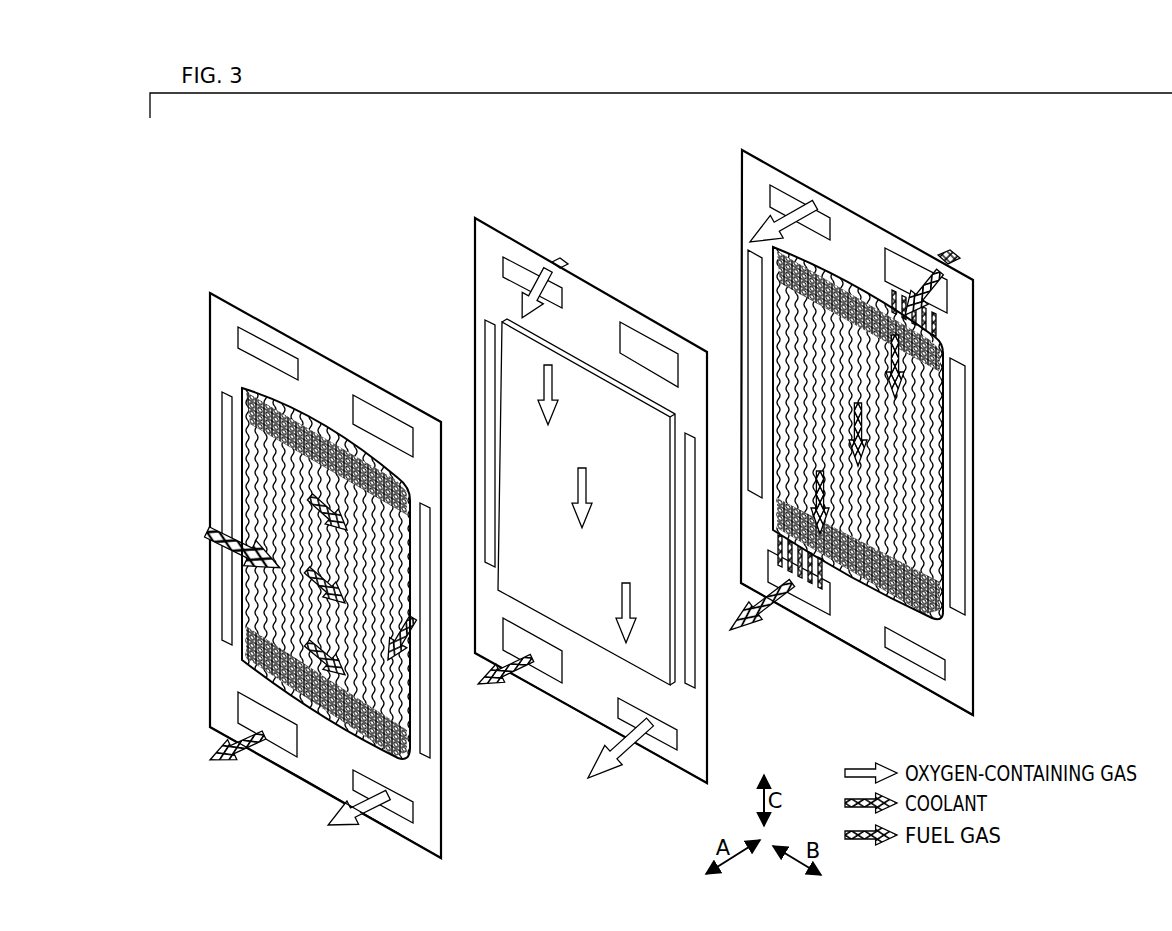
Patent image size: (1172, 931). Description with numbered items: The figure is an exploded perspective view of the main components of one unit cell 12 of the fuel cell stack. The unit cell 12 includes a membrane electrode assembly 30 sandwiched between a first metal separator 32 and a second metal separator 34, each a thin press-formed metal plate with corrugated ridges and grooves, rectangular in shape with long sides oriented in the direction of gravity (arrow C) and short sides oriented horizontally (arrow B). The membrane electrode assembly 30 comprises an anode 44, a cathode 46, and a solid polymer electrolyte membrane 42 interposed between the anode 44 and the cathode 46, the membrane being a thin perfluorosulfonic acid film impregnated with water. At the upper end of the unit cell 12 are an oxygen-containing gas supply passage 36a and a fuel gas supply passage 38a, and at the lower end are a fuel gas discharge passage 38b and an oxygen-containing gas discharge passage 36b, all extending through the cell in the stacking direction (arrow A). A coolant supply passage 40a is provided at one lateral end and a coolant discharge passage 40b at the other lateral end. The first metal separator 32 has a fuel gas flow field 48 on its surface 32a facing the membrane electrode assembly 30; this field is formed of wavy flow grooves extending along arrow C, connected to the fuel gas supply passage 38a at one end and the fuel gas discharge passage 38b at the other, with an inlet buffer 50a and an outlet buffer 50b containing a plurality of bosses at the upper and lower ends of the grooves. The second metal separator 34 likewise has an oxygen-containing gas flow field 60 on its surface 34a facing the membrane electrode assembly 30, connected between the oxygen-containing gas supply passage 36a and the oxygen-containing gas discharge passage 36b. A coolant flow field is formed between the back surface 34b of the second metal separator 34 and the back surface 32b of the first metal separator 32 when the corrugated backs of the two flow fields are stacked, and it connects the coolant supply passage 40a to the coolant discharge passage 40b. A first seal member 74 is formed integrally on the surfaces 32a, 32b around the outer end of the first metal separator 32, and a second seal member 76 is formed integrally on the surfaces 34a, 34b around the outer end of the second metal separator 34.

The unit cell 12 is at (300, 215).
The membrane electrode assembly 30 is at (473, 216).
The first metal separator 32 is at (740, 147).
The surface of the first metal separator 32a is at (885, 656).
The surface of the first metal separator 32b is at (812, 626).
The second metal separator 34 is at (207, 290).
The surface of the second metal separator 34a is at (265, 765).
The surface of the second metal separator 34b is at (305, 766).
The oxygen-containing gas supply passage 36a is at (258, 352).
The oxygen-containing gas discharge passage 36b is at (398, 807).
The fuel gas supply passage 38a is at (383, 420).
The fuel gas discharge passage 38b is at (250, 715).
The coolant supply passage 40a is at (222, 490).
The coolant discharge passage 40b is at (425, 735).
The solid polymer electrolyte membrane 42 is at (585, 696).
The anode 44 is at (590, 375).
The cathode 46 is at (555, 360).
The fuel gas flow field 48 is at (775, 337).
The inlet buffer 50a is at (842, 265).
The outlet buffer 50b is at (855, 590).
The oxygen-containing gas flow field 60 is at (262, 468).
The first seal member 74 is at (932, 700).
The second seal member 76 is at (380, 826).